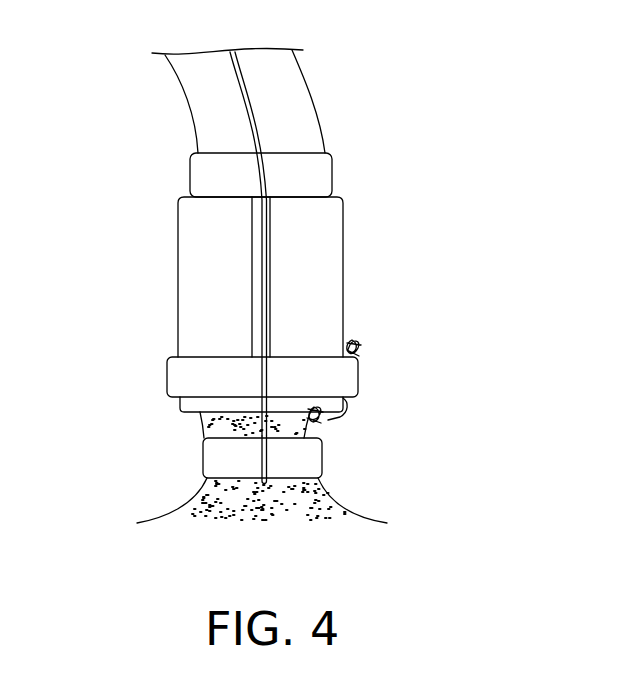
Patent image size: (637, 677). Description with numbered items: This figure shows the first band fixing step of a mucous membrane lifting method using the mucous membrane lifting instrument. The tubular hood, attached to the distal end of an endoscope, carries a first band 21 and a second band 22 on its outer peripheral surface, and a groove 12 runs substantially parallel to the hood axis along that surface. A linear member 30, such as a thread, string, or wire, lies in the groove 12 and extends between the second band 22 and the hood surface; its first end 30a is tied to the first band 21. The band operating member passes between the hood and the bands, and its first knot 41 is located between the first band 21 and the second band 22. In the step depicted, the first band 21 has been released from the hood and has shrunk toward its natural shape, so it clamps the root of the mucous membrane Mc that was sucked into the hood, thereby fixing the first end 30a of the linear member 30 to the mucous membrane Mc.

The groove 12 is at (269, 245).
The linear member 30 is at (263, 177).
The first end of the linear member 30a is at (267, 467).
The second band 22 is at (302, 370).
The first band 21 is at (315, 457).
The first knot 41 is at (327, 420).
The mucous membrane Mc is at (192, 508).